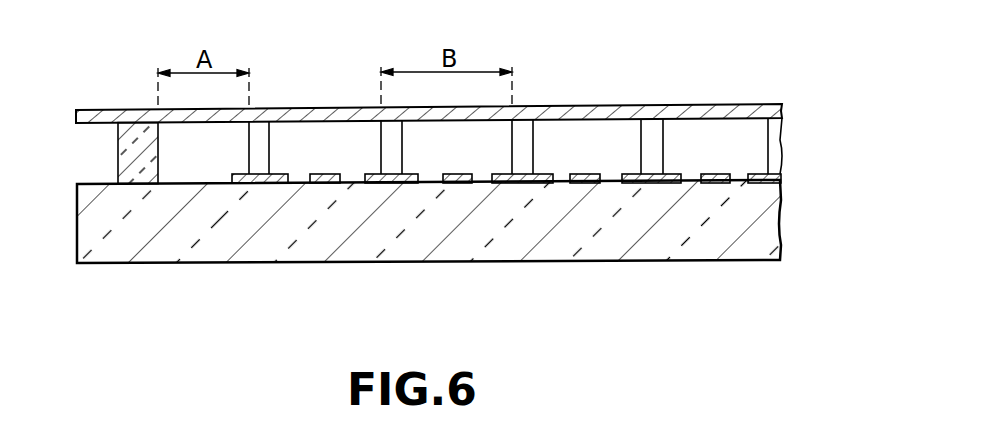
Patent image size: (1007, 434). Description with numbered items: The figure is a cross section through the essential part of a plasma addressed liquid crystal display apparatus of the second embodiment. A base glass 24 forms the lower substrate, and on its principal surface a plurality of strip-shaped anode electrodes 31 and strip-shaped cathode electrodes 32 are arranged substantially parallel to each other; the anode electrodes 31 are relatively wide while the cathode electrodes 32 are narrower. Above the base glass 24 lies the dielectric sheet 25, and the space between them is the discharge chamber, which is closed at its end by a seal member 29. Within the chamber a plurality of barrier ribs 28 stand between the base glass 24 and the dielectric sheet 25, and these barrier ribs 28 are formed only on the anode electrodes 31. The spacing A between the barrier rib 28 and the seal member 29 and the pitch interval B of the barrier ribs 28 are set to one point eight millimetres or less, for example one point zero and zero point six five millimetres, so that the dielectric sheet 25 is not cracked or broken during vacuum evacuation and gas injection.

The base glass 24 is at (207, 253).
The dielectric sheet 25 is at (597, 108).
The barrier rib 28 is at (657, 147).
The seal member 29 is at (125, 142).
The anode electrode 31 is at (373, 183).
The cathode electrode 32 is at (577, 183).